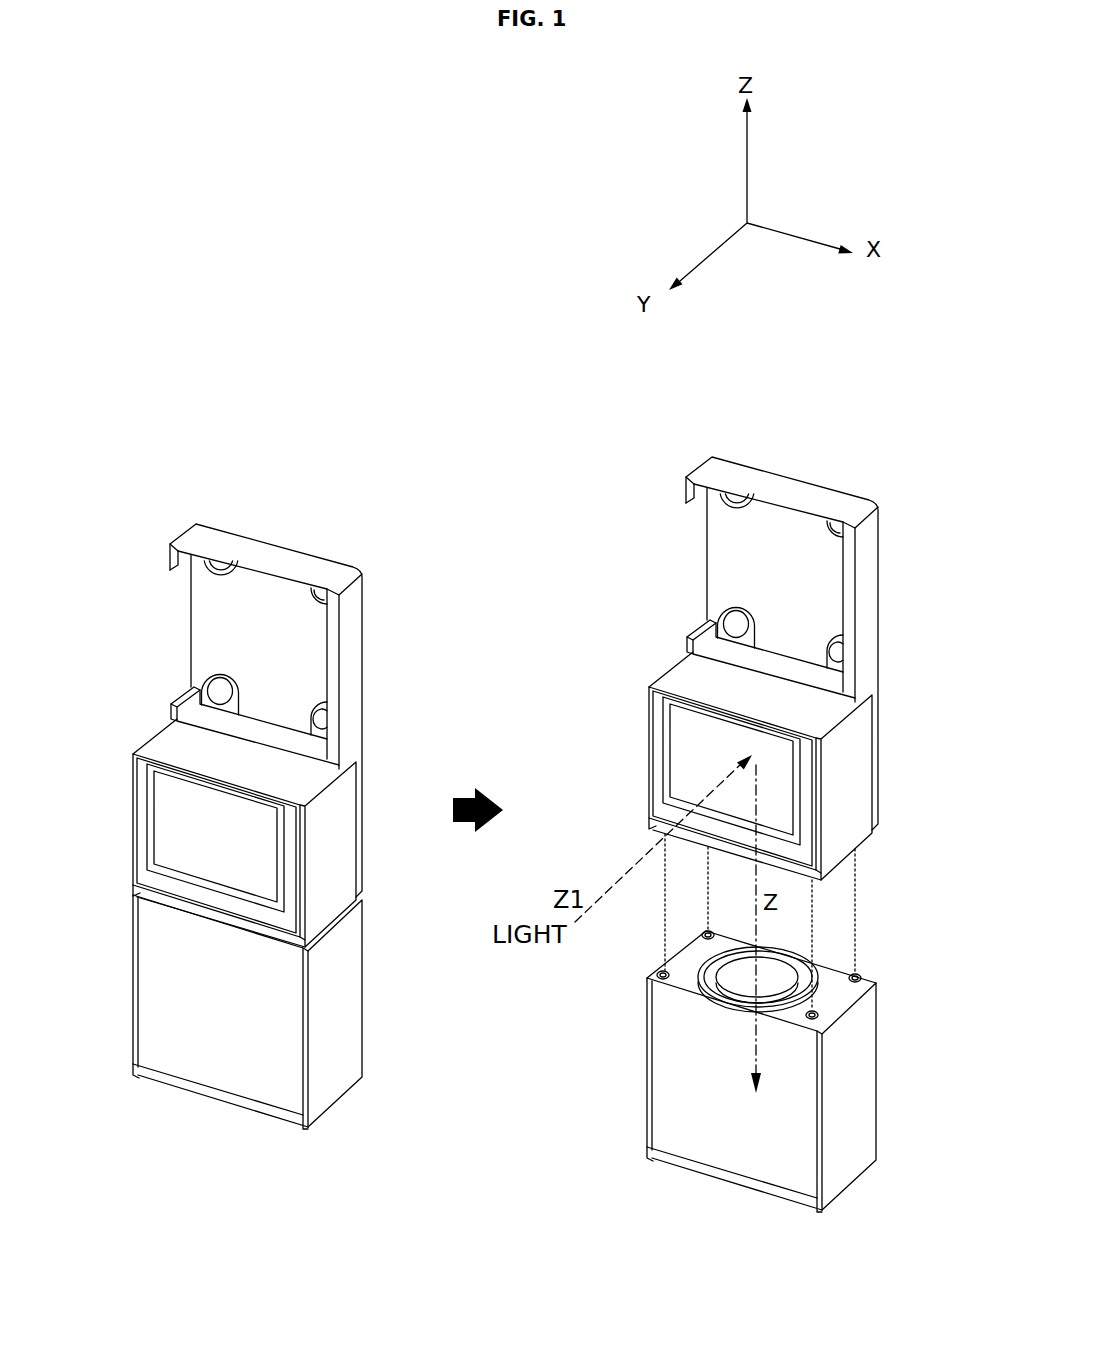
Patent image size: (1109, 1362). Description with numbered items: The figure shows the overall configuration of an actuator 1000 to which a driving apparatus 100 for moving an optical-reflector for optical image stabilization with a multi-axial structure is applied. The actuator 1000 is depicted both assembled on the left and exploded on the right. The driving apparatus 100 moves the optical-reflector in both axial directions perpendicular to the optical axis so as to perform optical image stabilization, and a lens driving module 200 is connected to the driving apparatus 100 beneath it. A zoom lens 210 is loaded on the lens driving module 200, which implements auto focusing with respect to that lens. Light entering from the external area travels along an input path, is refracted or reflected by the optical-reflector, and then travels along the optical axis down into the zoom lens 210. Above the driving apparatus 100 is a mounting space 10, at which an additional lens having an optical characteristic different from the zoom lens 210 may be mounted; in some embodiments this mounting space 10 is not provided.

The actuator 1000 is at (151, 489).
The mounting space 10 is at (721, 551).
The driving apparatus 100 is at (893, 755).
The lens driving module 200 is at (898, 1055).
The zoom lens 210 is at (812, 962).